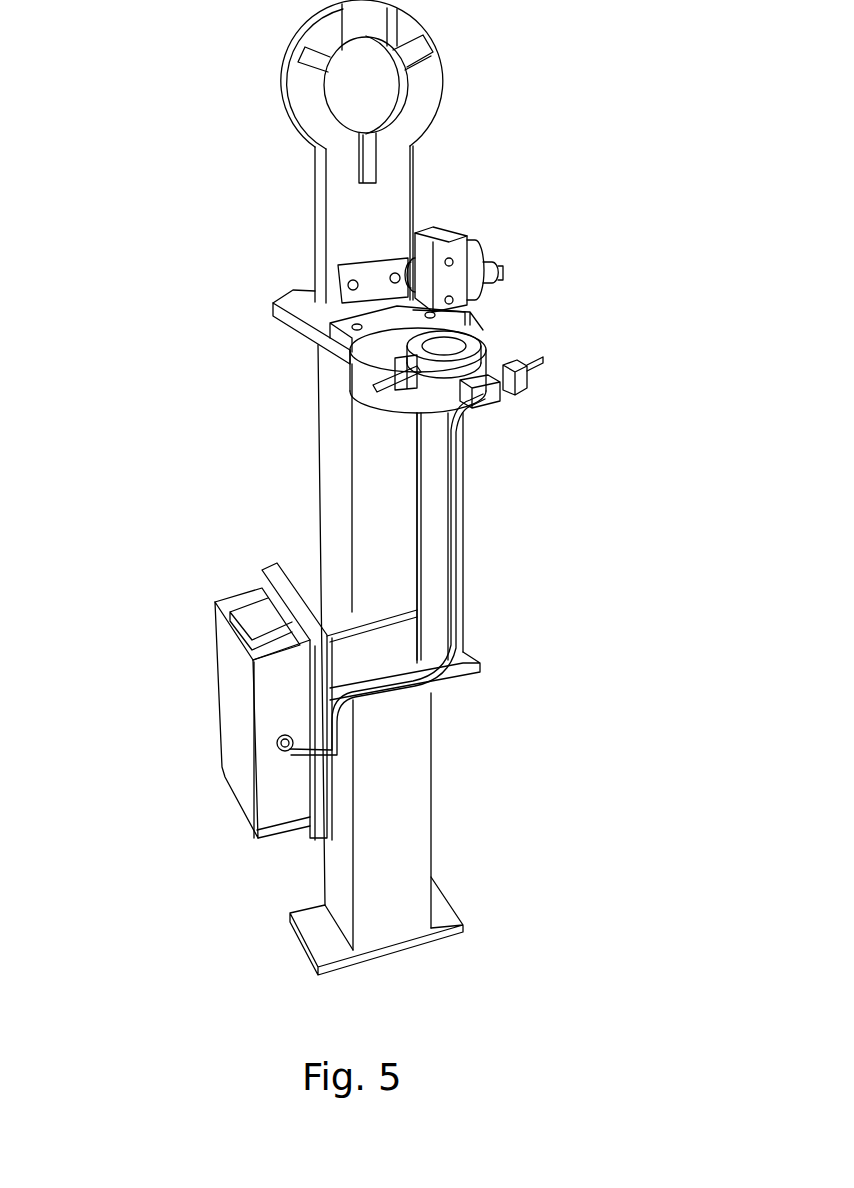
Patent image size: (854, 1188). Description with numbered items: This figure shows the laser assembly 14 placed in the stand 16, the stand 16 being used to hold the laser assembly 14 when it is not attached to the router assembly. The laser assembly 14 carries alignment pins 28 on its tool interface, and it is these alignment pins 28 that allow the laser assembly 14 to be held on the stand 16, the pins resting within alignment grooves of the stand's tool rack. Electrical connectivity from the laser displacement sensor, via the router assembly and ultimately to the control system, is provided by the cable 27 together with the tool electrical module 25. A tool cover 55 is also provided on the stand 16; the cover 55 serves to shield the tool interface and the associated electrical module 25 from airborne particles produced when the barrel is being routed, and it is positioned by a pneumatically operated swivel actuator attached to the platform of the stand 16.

The tool cover 55 is at (425, 108).
The alignment pins 28 is at (413, 338).
The tool electrical module 25 is at (480, 360).
The stand 16 is at (318, 497).
The laser assembly 14 is at (465, 514).
The cable 27 is at (343, 753).